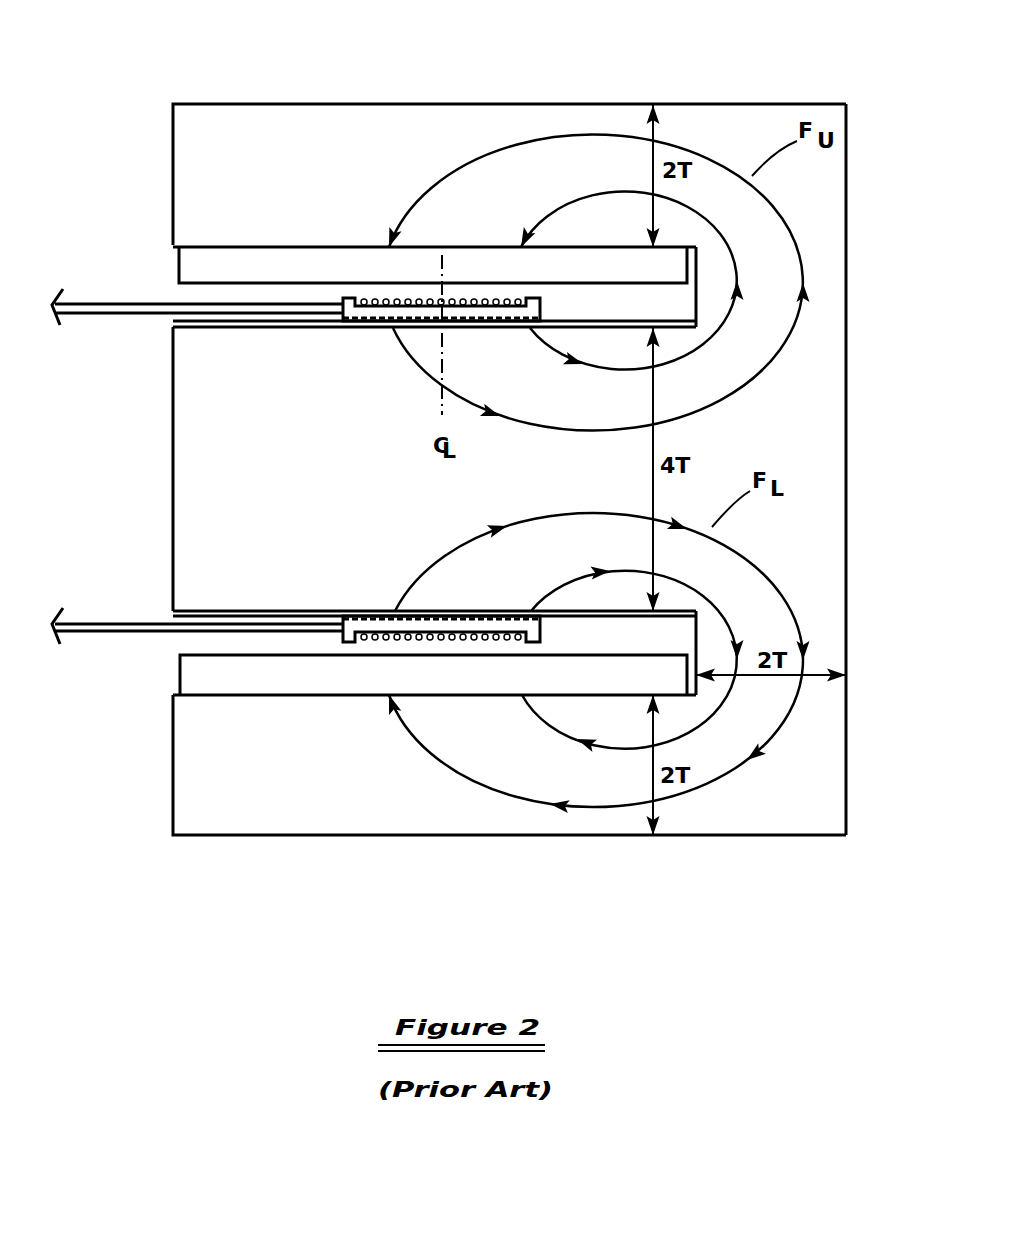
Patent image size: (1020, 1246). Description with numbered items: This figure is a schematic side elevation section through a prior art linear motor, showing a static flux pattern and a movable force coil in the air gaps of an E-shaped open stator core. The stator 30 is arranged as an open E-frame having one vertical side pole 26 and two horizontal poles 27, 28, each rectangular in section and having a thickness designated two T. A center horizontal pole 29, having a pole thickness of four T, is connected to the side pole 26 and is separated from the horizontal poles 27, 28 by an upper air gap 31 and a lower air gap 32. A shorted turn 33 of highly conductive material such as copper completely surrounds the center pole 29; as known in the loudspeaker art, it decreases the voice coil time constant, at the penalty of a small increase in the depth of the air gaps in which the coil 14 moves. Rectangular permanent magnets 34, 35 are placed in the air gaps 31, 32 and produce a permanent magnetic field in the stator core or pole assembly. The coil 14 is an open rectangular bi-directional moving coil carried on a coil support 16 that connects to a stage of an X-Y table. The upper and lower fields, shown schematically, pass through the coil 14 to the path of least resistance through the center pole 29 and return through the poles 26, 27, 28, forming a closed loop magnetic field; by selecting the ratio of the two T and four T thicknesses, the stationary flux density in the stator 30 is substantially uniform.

The moving coil 14 is at (420, 297).
The coil support 16 is at (355, 298).
The vertical side pole 26 is at (830, 323).
The horizontal pole 27 is at (483, 117).
The horizontal pole 28 is at (355, 818).
The center horizontal pole 29 is at (173, 514).
The stator 30 is at (295, 93).
The air gap 31 is at (678, 308).
The air gap 32 is at (685, 630).
The shorted turn 33 is at (215, 327).
The rectangular permanent magnet 34 is at (186, 263).
The rectangular permanent magnet 35 is at (190, 672).